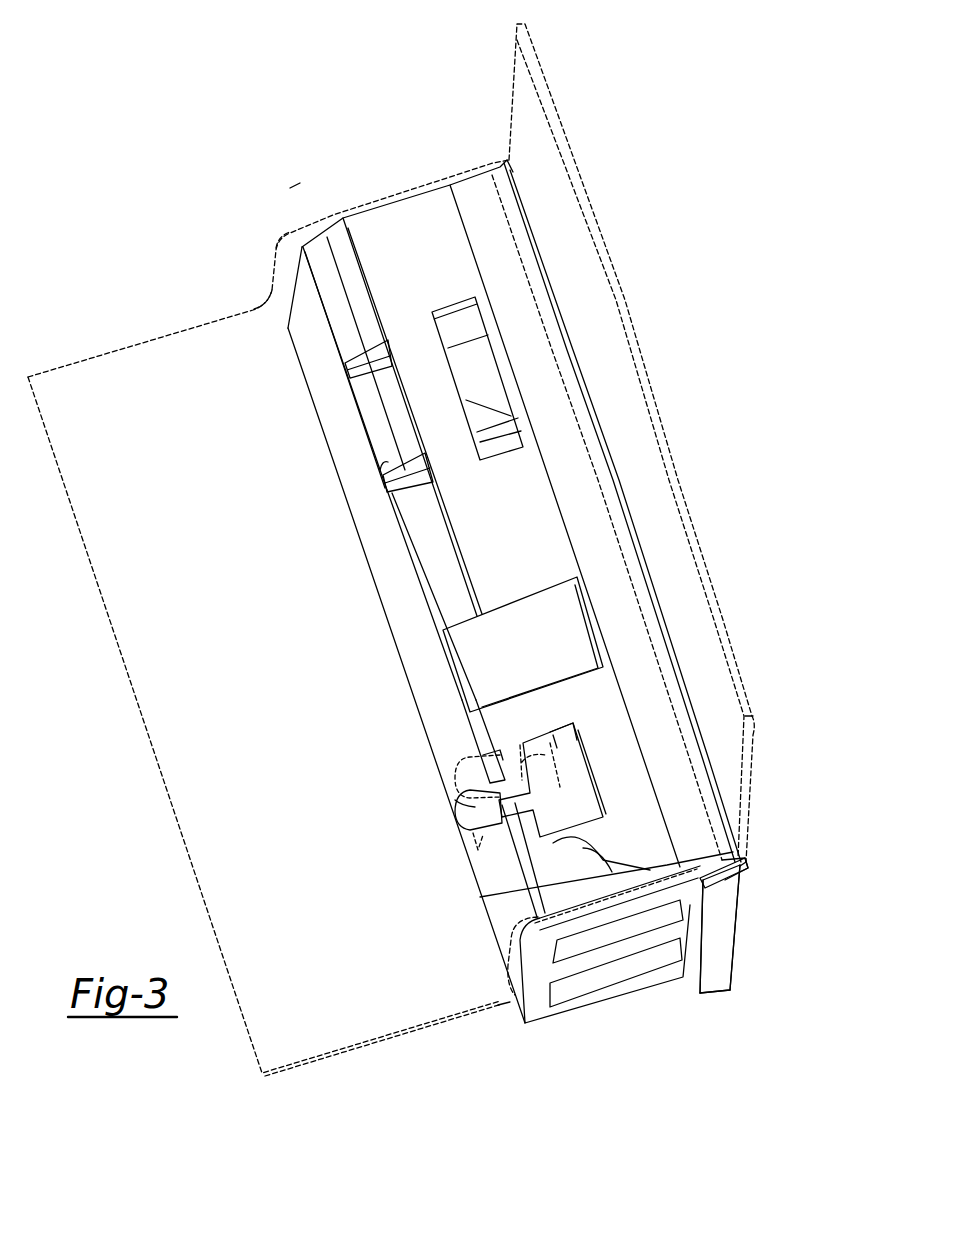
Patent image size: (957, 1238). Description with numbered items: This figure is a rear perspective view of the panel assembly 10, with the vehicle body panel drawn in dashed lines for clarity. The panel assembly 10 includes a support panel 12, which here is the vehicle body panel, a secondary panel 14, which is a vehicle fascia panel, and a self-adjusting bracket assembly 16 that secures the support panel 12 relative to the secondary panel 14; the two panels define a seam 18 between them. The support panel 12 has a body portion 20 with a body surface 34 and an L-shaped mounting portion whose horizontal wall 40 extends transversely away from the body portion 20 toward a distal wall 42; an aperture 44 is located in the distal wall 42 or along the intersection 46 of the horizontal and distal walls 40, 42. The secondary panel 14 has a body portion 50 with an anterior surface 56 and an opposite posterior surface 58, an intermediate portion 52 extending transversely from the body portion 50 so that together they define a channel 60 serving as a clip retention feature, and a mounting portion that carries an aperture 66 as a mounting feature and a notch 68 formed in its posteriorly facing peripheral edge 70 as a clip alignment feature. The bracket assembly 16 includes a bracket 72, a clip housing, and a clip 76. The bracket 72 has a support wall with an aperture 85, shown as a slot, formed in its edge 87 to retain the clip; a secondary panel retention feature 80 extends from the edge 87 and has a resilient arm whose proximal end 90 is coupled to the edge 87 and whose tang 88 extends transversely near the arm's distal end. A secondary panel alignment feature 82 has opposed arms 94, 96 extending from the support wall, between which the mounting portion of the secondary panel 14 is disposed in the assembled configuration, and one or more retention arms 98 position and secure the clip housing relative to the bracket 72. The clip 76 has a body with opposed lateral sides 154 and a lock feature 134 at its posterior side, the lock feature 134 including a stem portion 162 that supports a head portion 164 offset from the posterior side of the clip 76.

The panel assembly 10 is at (290, 183).
The support panel 12 is at (760, 788).
The secondary panel 14 is at (738, 975).
The self-adjusting bracket assembly 16 is at (510, 1017).
The seam 18 is at (750, 862).
The body portion 20 is at (508, 60).
The body surface 34 is at (757, 712).
The horizontal wall 40 is at (392, 193).
The distal wall 42 is at (270, 272).
The aperture 44 is at (455, 780).
The intersection 46 is at (280, 232).
The body portion 50 is at (718, 970).
The intermediate portion 52 is at (738, 876).
The anterior surface 56 is at (745, 938).
The posterior surface 58 is at (695, 962).
The channel 60 is at (735, 895).
The aperture 66 is at (455, 310).
The notch 68 is at (577, 735).
The posteriorly facing peripheral edge 70 is at (492, 717).
The bracket 72 is at (560, 1022).
The clip 76 is at (588, 786).
The secondary panel retention feature 80 is at (463, 350).
The secondary panel alignment feature 82 is at (620, 920).
The aperture 85 is at (487, 760).
The edge 87 is at (337, 296).
The tang 88 is at (483, 378).
The proximal end 90 is at (380, 462).
The opposed arm 94 is at (583, 848).
The opposed arm 96 is at (655, 935).
The retention arm 98 is at (597, 960).
The lock feature 134 is at (472, 806).
The lateral side 154 is at (648, 875).
The stem portion 162 is at (535, 745).
The head portion 164 is at (473, 823).